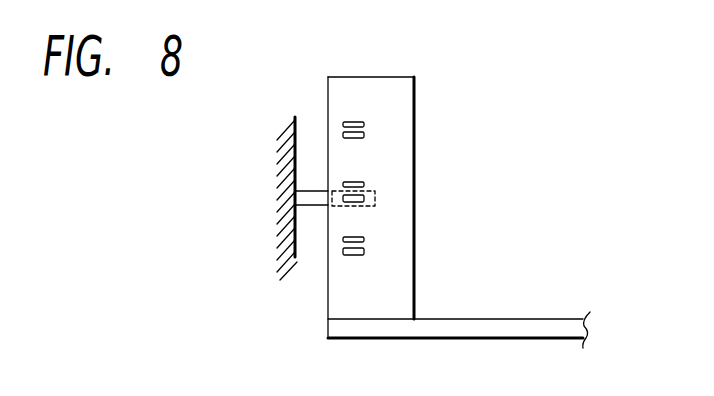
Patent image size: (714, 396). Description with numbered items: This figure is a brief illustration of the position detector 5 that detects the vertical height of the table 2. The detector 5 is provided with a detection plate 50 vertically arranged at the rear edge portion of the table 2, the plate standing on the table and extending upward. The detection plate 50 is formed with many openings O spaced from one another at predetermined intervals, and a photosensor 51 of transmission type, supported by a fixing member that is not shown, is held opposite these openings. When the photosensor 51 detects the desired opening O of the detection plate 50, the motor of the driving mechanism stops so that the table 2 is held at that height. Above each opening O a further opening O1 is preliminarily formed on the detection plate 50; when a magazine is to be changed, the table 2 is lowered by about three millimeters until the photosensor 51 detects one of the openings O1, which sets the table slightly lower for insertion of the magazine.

The detector 5 is at (312, 76).
The detection plate 50 is at (405, 210).
The photosensor 51 is at (300, 206).
The table 2 is at (401, 339).
The opening O is at (364, 136).
The opening O1 is at (355, 120).